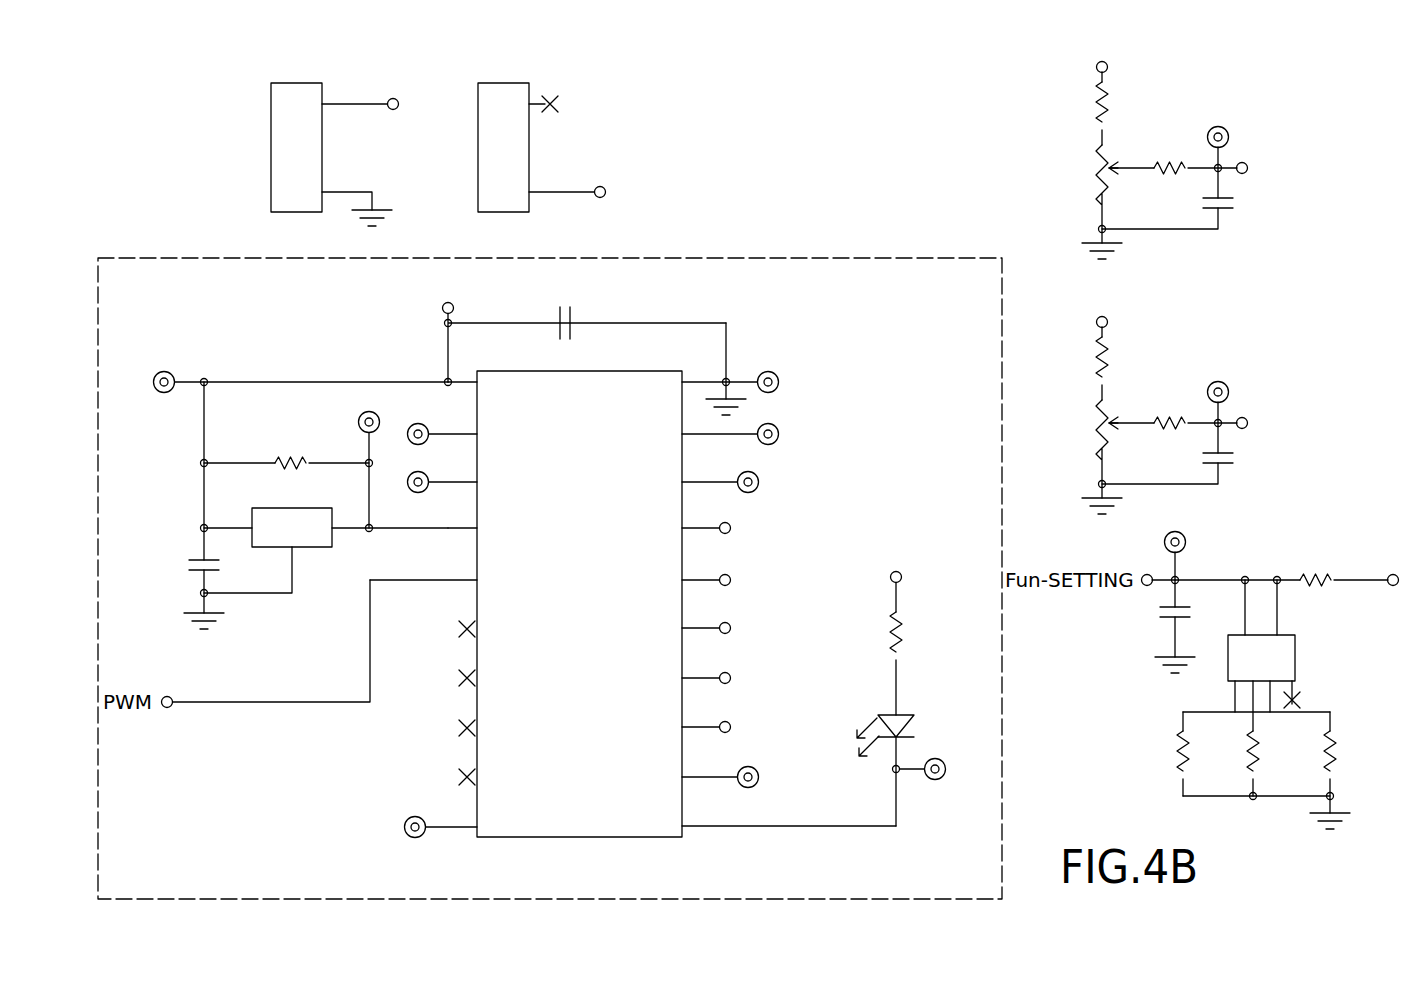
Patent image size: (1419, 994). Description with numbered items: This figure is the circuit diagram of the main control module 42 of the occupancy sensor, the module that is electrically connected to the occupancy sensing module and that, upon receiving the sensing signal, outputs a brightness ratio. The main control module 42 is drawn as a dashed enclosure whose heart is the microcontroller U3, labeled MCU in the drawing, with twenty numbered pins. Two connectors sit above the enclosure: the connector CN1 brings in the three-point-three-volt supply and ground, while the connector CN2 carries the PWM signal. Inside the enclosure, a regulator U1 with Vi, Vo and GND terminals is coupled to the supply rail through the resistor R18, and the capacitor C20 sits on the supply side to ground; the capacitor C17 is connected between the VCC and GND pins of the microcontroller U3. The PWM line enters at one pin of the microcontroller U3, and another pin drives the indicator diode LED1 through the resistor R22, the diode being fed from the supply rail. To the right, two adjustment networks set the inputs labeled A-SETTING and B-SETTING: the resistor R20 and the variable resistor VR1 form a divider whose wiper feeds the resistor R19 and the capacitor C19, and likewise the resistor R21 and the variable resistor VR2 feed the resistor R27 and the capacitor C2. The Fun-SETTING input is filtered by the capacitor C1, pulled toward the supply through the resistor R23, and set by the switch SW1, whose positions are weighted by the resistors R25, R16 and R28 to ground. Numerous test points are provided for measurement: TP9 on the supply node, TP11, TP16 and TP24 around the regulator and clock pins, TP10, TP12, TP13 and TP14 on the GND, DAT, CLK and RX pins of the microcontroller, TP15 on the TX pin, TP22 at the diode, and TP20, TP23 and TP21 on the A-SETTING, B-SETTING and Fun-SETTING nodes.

The main control module 42 is at (250, 258).
The power connector CN1 is at (359, 140).
The PWM connector CN2 is at (572, 133).
The microcontroller U3 is at (633, 595).
The voltage regulator U1 is at (325, 531).
The capacitor C17 is at (577, 333).
The capacitor C20 is at (221, 521).
The resistor R18 is at (287, 451).
The resistor R22 is at (910, 631).
The light emitting diode LED1 is at (914, 758).
The resistor R20 is at (1117, 92).
The variable resistor VR1 is at (1089, 216).
The resistor R19 is at (1234, 160).
The capacitor C19 is at (1189, 188).
The resistor R21 is at (1117, 347).
The variable resistor VR2 is at (1089, 473).
The resistor R27 is at (1234, 415).
The capacitor C2 is at (1183, 443).
The capacitor C1 is at (1185, 642).
The resistor R23 is at (1359, 567).
The DIP switch SW1 is at (1281, 655).
The resistor R25 is at (1204, 754).
The resistor R16 is at (1274, 763).
The resistor R28 is at (1343, 787).
The test point TP9 is at (168, 371).
The test point TP10 is at (796, 382).
The test point TP11 is at (344, 468).
The test point TP12 is at (796, 434).
The test point TP13 is at (776, 482).
The test point TP14 is at (776, 777).
The test point TP15 is at (387, 827).
The test point TP16 is at (412, 434).
The test point TP20 is at (1219, 125).
The test point TP21 is at (1184, 541).
The test point TP22 is at (947, 769).
The test point TP23 is at (1219, 380).
The test point TP24 is at (412, 488).